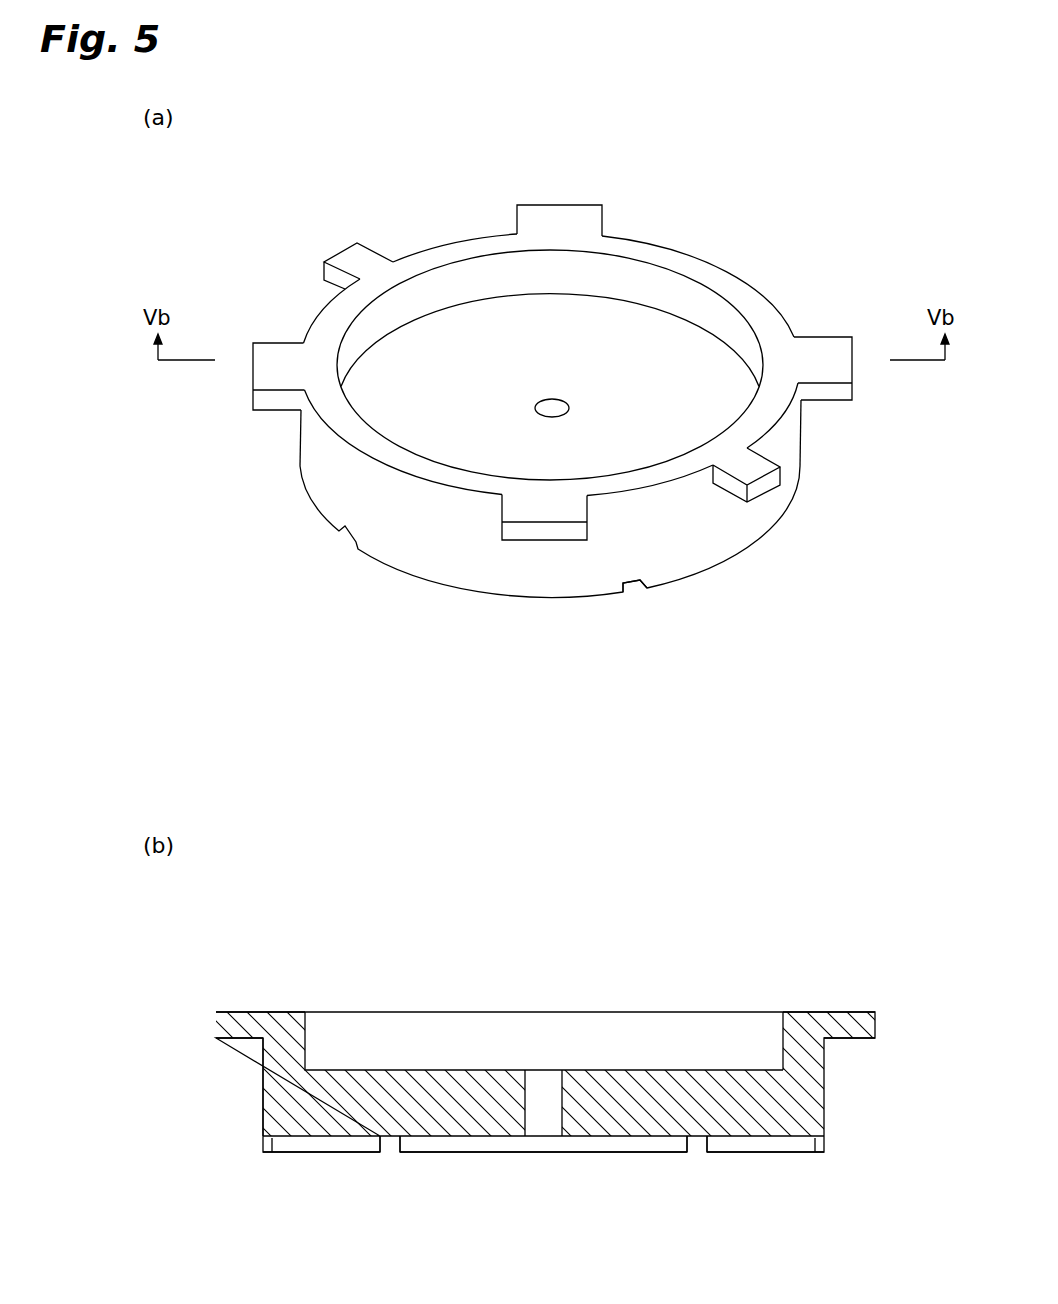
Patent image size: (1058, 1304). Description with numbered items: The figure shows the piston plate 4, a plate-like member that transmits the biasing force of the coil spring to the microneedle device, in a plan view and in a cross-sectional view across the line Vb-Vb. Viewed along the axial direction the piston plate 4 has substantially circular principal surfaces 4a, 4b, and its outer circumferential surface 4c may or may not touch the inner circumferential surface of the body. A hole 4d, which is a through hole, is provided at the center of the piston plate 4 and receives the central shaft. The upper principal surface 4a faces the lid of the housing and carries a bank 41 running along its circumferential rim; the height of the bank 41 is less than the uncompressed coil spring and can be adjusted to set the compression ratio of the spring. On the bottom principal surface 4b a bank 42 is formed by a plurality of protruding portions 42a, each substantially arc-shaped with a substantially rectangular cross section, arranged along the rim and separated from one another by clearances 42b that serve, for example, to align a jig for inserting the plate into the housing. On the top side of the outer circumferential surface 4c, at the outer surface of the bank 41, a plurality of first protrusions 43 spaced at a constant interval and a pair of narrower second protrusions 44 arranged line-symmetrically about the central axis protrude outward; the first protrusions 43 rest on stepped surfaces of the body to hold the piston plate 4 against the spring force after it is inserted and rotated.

The piston plate 4 is at (803, 248).
The bank 41 is at (457, 287).
The upper principal surface 4a is at (673, 353).
The bottom principal surface 4b is at (427, 1138).
The outer circumferential surface 4c is at (347, 511).
The hole 4d is at (554, 408).
The bank 42 is at (832, 1144).
The protruding portions 42a is at (603, 1143).
The clearances 42b is at (627, 587).
The first protrusions 43 is at (827, 375).
The second protrusions 44 is at (350, 257).